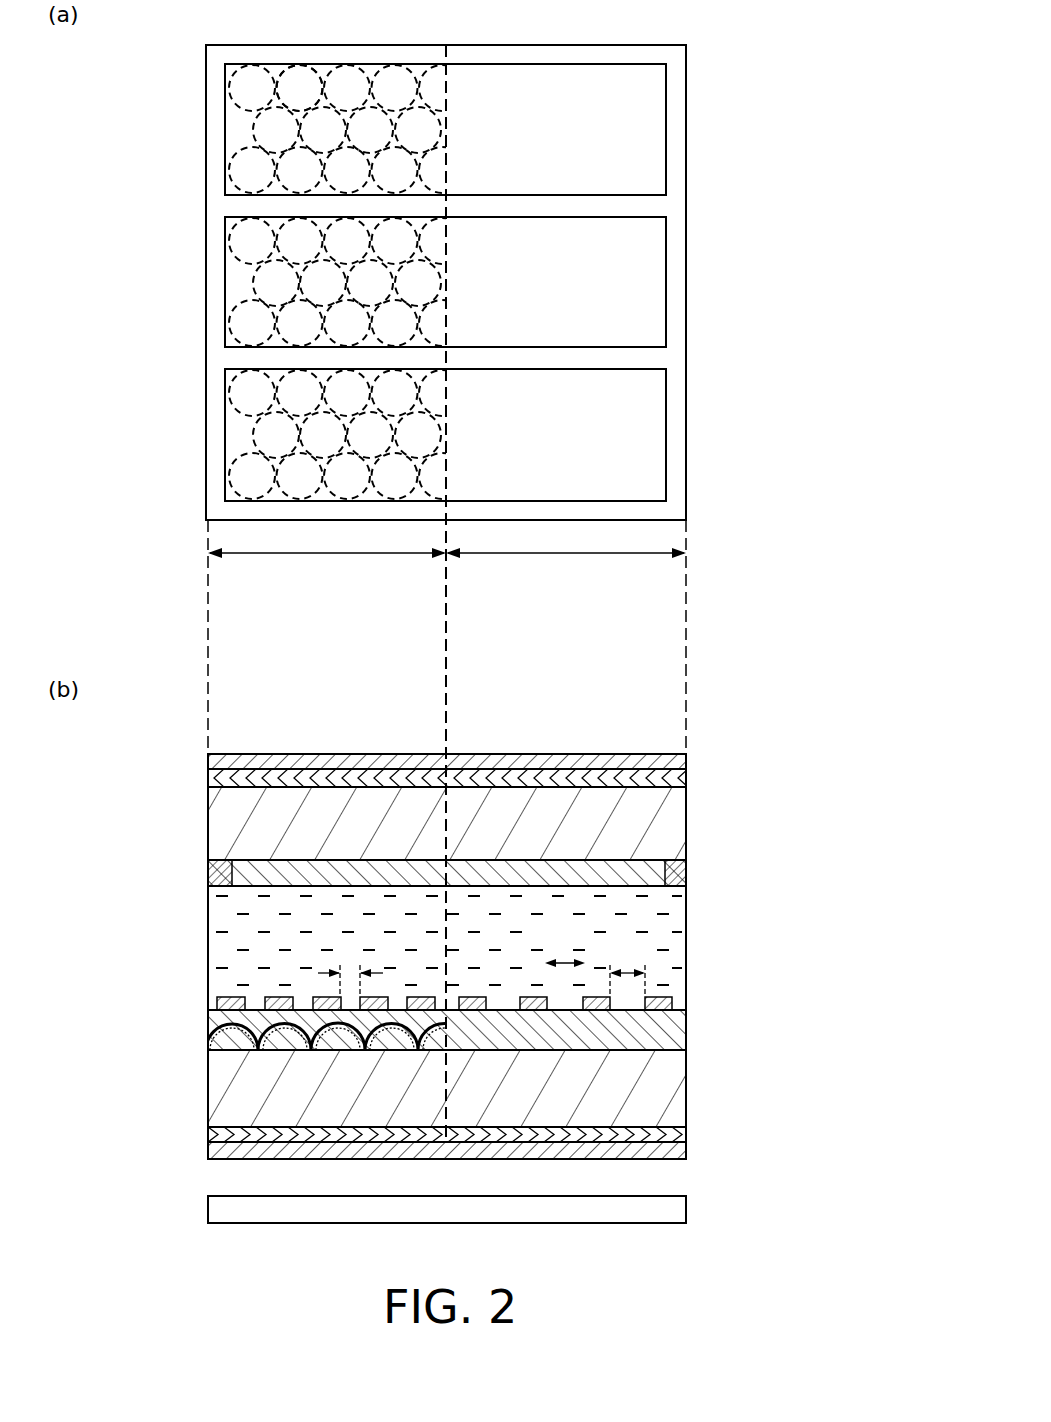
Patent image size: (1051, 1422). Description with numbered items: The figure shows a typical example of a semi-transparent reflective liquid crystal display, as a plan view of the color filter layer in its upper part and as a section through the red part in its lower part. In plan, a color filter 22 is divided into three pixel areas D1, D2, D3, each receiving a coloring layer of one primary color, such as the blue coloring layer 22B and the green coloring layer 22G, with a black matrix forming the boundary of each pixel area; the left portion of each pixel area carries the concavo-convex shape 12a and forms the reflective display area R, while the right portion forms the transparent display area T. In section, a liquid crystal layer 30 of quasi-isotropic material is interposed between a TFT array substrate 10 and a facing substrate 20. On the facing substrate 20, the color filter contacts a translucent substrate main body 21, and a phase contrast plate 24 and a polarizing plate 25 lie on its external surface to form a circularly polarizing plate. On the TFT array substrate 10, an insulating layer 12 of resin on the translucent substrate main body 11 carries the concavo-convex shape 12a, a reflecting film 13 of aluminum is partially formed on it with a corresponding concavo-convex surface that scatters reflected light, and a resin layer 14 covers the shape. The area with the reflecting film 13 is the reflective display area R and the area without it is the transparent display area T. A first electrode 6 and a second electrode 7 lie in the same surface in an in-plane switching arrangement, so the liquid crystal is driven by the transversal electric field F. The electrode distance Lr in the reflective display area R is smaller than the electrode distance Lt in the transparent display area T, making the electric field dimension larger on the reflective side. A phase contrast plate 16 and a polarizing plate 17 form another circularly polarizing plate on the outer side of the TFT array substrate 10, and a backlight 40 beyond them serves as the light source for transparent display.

The concavo-convex shape 12a is at (304, 78).
The color filter 22 is at (688, 62).
The blue coloring layer 22B is at (652, 126).
The green coloring layer 22G is at (652, 279).
The pixel area D1 is at (226, 128).
The pixel area D2 is at (226, 281).
The pixel area D3 is at (226, 431).
The reflective display area R is at (327, 568).
The transparent display area T is at (566, 568).
The facing substrate 20 is at (430, 817).
The polarizing plate 25 is at (688, 759).
The phase contrast plate 24 is at (688, 779).
The substrate main body 21 is at (668, 822).
The liquid crystal layer 30 is at (688, 940).
The transversal electric field F is at (565, 950).
The distance between electrodes in reflective display area Lr is at (350, 970).
The distance between electrodes in transparent display area Lt is at (627, 970).
The TFT array substrate 10 is at (436, 1075).
The second electrode 7 is at (208, 1001).
The first electrode 6 is at (688, 1006).
The resin layer 14 is at (212, 1021).
The reflecting film 13 is at (210, 1034).
The insulating layer 12 is at (208, 1050).
The substrate main body 11 is at (668, 1092).
The phase contrast plate 16 is at (688, 1134).
The polarizing plate 17 is at (688, 1151).
The backlight 40 is at (688, 1210).